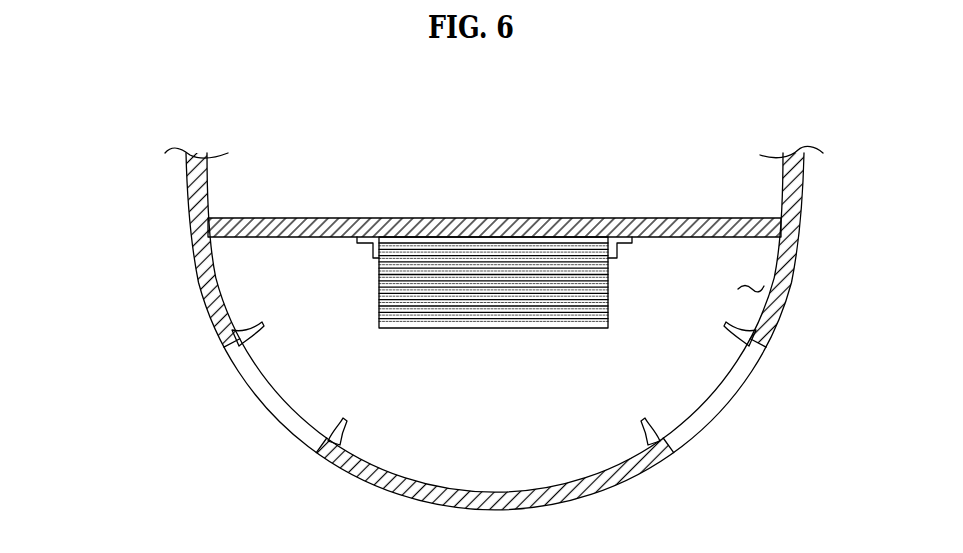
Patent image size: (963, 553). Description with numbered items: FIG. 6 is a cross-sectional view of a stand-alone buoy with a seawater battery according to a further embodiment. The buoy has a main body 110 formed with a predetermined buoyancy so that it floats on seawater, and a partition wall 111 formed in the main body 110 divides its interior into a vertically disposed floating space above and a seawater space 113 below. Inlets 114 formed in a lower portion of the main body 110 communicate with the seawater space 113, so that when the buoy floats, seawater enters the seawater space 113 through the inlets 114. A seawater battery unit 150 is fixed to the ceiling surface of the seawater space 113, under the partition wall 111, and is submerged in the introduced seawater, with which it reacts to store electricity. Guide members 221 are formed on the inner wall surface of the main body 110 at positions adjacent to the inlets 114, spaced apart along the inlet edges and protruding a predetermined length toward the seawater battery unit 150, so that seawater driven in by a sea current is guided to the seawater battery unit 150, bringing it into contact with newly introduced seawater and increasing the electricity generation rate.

The main body 110 is at (188, 192).
The partition wall 111 is at (305, 218).
The seawater space 113 is at (745, 286).
The inlet 114 is at (733, 384).
The seawater battery unit 150 is at (398, 287).
The guide member 221 is at (654, 455).